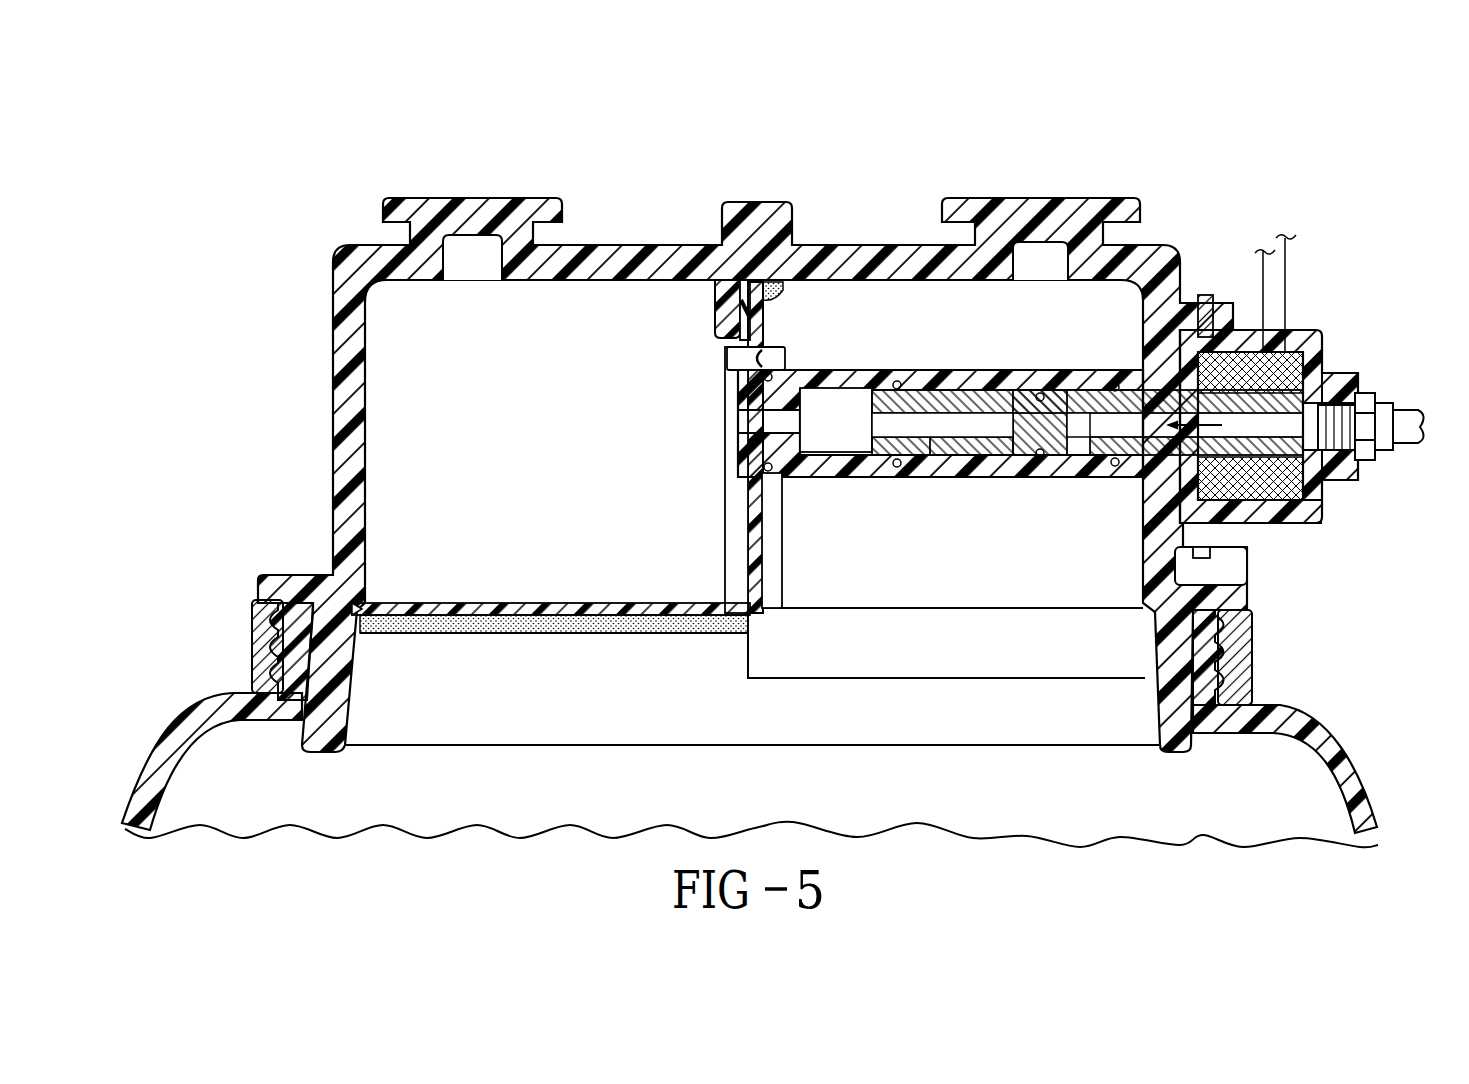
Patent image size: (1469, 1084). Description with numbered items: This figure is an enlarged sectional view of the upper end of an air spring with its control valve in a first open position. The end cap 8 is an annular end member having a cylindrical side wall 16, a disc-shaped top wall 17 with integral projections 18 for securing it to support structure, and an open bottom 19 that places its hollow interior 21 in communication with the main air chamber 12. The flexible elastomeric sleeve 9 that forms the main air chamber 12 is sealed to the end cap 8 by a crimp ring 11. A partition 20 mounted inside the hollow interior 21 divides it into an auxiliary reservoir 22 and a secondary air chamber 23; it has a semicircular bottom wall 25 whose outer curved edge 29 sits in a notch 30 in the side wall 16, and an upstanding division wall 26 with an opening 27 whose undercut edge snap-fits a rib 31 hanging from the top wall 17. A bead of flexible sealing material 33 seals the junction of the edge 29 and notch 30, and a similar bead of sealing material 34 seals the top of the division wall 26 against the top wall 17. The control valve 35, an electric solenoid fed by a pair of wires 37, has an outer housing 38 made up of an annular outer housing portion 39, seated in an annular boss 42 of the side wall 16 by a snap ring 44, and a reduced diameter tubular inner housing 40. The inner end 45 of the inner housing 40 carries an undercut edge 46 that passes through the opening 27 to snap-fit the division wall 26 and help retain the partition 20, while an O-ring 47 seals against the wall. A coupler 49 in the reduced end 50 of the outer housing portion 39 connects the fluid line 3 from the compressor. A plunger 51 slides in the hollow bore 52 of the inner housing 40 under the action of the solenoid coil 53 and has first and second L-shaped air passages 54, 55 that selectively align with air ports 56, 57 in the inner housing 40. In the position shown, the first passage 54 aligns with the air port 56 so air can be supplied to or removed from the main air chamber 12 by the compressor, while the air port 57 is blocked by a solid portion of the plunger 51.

The fluid line 3 is at (1408, 418).
The end cap 8 is at (328, 302).
The flexible elastomeric sleeve 9 is at (1355, 775).
The crimp ring 11 is at (258, 638).
The main air chamber 12 is at (1272, 810).
The cylindrical side wall 16 is at (345, 352).
The top wall 17 is at (630, 258).
The projections 18 is at (462, 207).
The open bottom 19 is at (398, 722).
The partition 20 is at (550, 615).
The hollow interior 21 is at (405, 422).
The auxiliary reservoir 22 is at (410, 455).
The secondary air chamber 23 is at (905, 330).
The semicircular bottom wall 25 is at (430, 620).
The upstanding division wall 26 is at (764, 568).
The opening 27 is at (745, 455).
The outer curved edge 29 is at (366, 603).
The notch 30 is at (338, 595).
The rib 31 is at (720, 305).
The bead of flexible sealing material 33 is at (495, 622).
The bead of sealing material 34 is at (776, 293).
The control valve 35 is at (1318, 530).
The wires 37 is at (1288, 293).
The outer housing 38 is at (1280, 530).
The annular outer housing portion 39 is at (1310, 513).
The tubular inner housing 40 is at (856, 472).
The annular boss 42 is at (1232, 310).
The snap ring 44 is at (1205, 293).
The inner end 45 is at (748, 395).
The undercut edge 46 is at (757, 357).
The O-ring 47 is at (768, 470).
The coupler 49 is at (1335, 445).
The reduced end 50 is at (1340, 380).
The plunger 51 is at (962, 390).
The hollow bore 52 is at (840, 418).
The solenoid coil 53 is at (1252, 497).
The first L-shaped air passage 54 is at (1130, 425).
The second L-shaped air passage 55 is at (965, 430).
The air port 56 is at (1072, 470).
The air port 57 is at (930, 470).